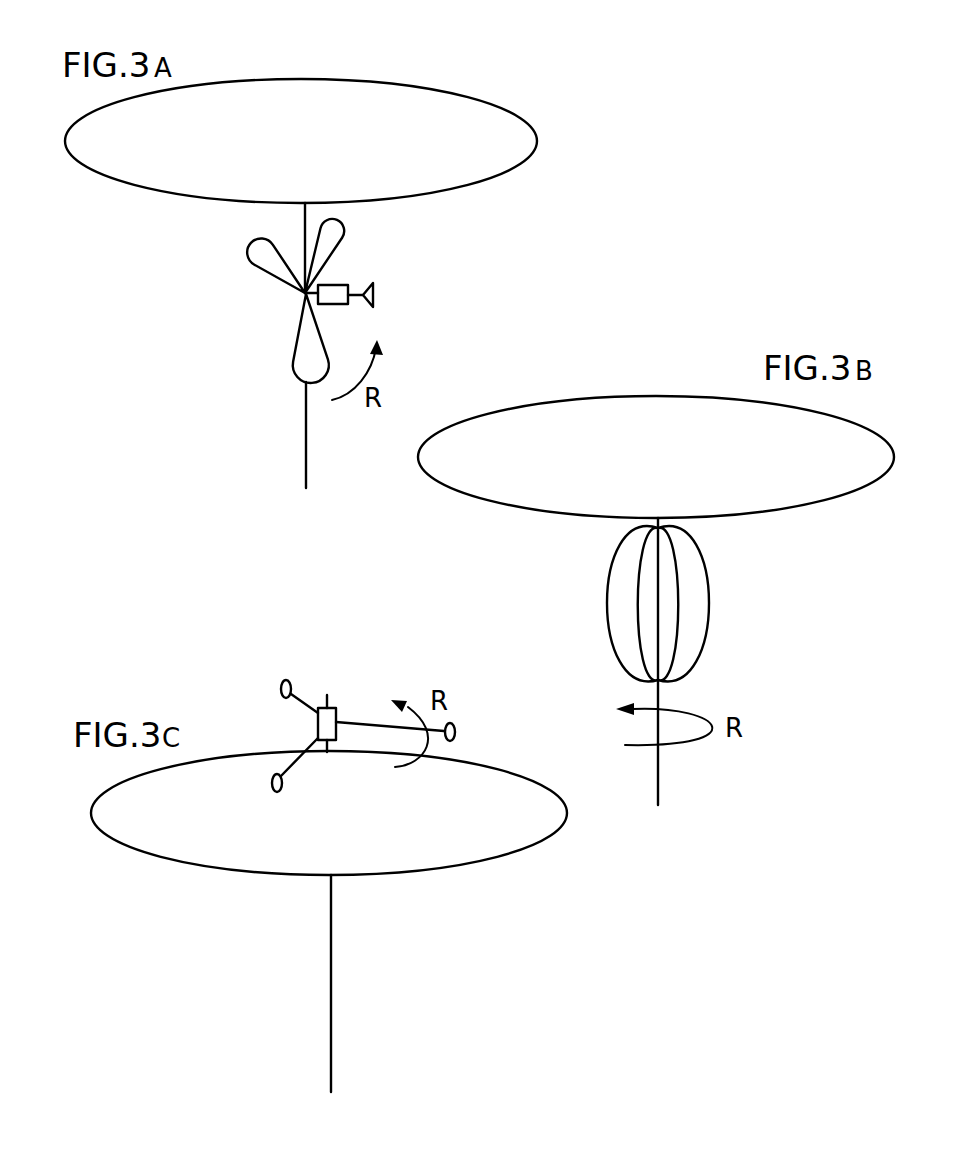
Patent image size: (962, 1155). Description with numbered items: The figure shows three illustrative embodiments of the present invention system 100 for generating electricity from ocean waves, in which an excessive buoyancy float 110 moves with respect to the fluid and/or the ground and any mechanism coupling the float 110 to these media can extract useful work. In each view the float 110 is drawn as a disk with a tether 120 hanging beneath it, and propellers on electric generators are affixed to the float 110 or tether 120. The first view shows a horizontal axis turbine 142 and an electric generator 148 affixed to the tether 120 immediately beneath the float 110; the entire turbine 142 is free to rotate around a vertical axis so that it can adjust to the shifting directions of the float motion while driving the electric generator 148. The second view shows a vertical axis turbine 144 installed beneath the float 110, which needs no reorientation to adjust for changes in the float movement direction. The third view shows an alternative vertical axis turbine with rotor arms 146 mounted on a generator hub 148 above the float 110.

In FIG. 3A, the system 100 is at (432, 288).
In FIG. 3B, the system 100 is at (546, 592).
In FIG. 3C, the system 100 is at (505, 952).
In FIG. 3A, the excessive buoyancy float 110 is at (422, 84).
In FIG. 3B, the excessive buoyancy float 110 is at (610, 397).
In FIG. 3C, the excessive buoyancy float 110 is at (232, 875).
In FIG. 3A, the tether 120 is at (305, 428).
In FIG. 3B, the tether 120 is at (660, 770).
In FIG. 3C, the tether 120 is at (331, 1015).
In FIG. 3A, the horizontal axis turbine 142 is at (302, 295).
In FIG. 3B, the vertical axis turbine 144 is at (710, 592).
In FIG. 3C, the cup-type rotor arms 146 is at (340, 708).
In FIG. 3A, the electric generator 148 is at (335, 286).
In FIG. 3C, the electric generator 148 is at (317, 726).